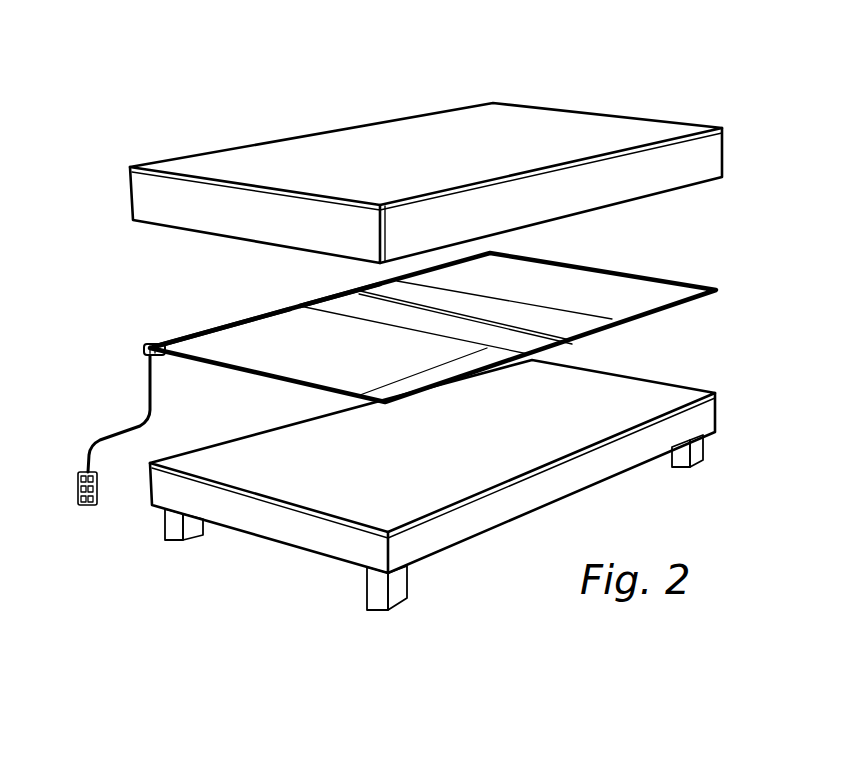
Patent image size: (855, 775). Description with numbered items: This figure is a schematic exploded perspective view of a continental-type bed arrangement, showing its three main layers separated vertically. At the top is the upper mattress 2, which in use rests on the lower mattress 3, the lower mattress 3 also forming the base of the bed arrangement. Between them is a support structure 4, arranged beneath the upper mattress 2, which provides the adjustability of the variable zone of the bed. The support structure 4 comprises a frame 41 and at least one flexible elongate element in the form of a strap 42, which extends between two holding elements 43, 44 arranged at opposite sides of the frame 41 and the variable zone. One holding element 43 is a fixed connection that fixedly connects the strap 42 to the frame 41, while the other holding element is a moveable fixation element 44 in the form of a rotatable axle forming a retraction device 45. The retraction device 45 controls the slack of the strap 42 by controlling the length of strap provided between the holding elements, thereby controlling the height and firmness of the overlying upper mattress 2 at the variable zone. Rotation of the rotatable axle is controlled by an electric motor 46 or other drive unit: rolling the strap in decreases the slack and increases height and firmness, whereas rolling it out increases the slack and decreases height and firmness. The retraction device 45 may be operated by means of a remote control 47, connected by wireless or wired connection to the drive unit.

The upper mattress 2 is at (215, 165).
The lower mattress 3 is at (696, 422).
The support structure 4 is at (437, 399).
The frame 41 is at (648, 276).
The strap 42 is at (612, 320).
The holding element 43 is at (572, 342).
The moveable fixation element 44 is at (333, 295).
The retraction device 45 is at (243, 321).
The electric motor 46 is at (143, 352).
The remote control 47 is at (88, 506).